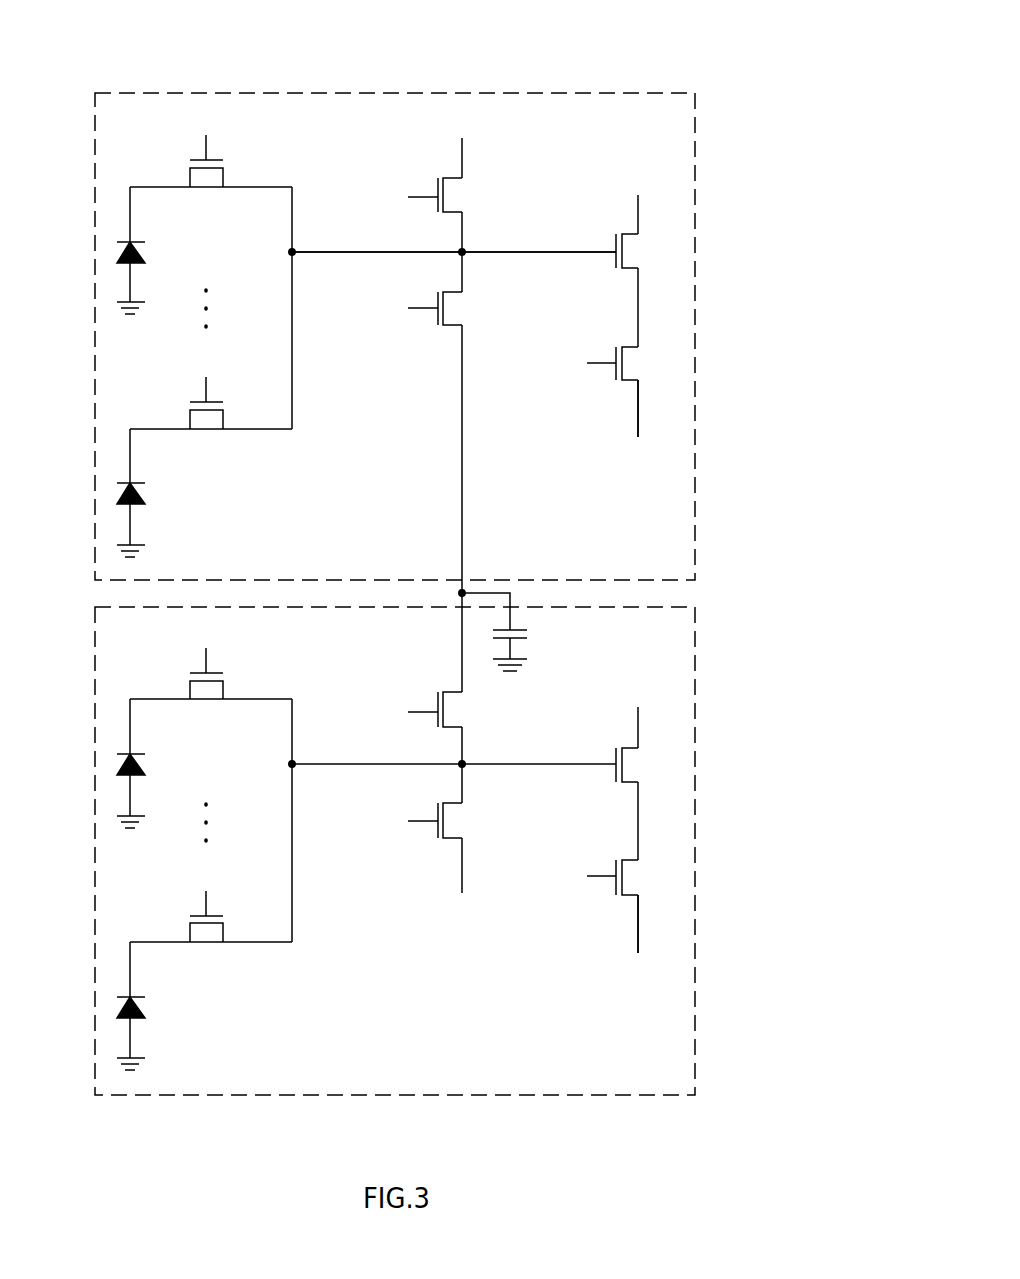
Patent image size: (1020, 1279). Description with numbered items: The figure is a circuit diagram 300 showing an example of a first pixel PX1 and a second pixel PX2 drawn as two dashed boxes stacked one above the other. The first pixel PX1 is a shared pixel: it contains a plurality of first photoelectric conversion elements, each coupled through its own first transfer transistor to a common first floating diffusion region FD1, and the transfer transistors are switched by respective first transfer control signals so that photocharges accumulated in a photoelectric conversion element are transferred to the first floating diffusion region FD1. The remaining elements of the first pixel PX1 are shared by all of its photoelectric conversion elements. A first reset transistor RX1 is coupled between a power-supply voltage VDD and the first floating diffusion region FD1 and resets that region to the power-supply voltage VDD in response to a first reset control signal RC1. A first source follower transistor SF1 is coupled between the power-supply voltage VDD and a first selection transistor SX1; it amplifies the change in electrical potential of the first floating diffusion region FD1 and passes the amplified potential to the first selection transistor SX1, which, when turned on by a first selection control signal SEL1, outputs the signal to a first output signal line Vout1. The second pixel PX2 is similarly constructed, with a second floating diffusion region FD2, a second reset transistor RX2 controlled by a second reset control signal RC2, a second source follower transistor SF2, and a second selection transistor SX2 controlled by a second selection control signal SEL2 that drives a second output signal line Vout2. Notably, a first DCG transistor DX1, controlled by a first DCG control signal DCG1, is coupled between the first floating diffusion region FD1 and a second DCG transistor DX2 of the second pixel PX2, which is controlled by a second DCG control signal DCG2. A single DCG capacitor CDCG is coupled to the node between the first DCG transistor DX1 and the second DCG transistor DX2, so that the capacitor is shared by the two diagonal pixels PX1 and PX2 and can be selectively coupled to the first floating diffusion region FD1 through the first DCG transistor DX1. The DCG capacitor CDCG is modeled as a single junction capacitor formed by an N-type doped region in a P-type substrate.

The circuit diagram 300 is at (698, 36).
The first pixel PX1 is at (697, 93).
The second pixel PX2 is at (697, 607).
The power-supply voltage VDD is at (551, 518).
The first reset control signal RC1 is at (403, 195).
The first reset transistor RX1 is at (472, 195).
The first floating diffusion region FD1 is at (454, 236).
The first DCG control signal DCG1 is at (397, 308).
The first DCG transistor DX1 is at (472, 308).
The first source follower transistor SF1 is at (647, 251).
The first selection control signal SEL1 is at (574, 363).
The first selection transistor SX1 is at (650, 363).
The first output signal line Vout1 is at (650, 425).
The DCG capacitor CDCG is at (518, 630).
The second DCG control signal DCG2 is at (397, 709).
The second DCG transistor DX2 is at (472, 709).
The second floating diffusion region FD2 is at (454, 749).
The second reset control signal RC2 is at (403, 820).
The second reset transistor RX2 is at (472, 820).
The second source follower transistor SF2 is at (647, 765).
The second selection control signal SEL2 is at (574, 877).
The second selection transistor SX2 is at (650, 877).
The second output signal line Vout2 is at (650, 939).